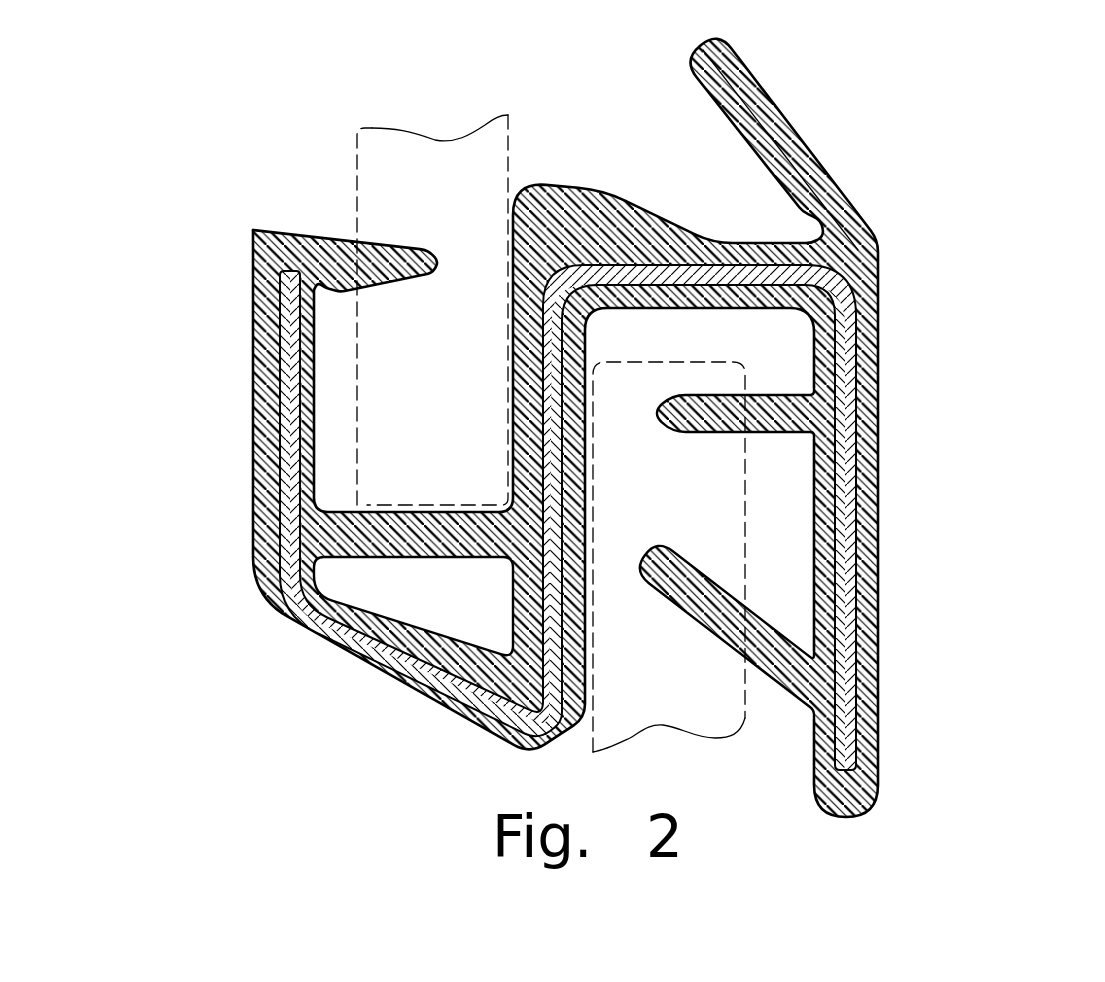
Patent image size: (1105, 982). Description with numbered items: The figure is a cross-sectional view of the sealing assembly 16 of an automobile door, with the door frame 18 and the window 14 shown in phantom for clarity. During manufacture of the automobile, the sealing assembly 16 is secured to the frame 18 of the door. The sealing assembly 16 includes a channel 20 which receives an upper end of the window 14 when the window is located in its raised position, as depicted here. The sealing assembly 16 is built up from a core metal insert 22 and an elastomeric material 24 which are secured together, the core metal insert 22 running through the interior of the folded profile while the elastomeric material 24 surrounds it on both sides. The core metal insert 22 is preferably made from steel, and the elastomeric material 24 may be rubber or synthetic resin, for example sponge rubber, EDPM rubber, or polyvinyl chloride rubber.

The window 14 is at (647, 730).
The sealing assembly 16 is at (645, 428).
The frame 18 is at (357, 200).
The channel 20 is at (812, 530).
The core metal insert 22 is at (290, 478).
The elastomeric material 24 is at (263, 358).